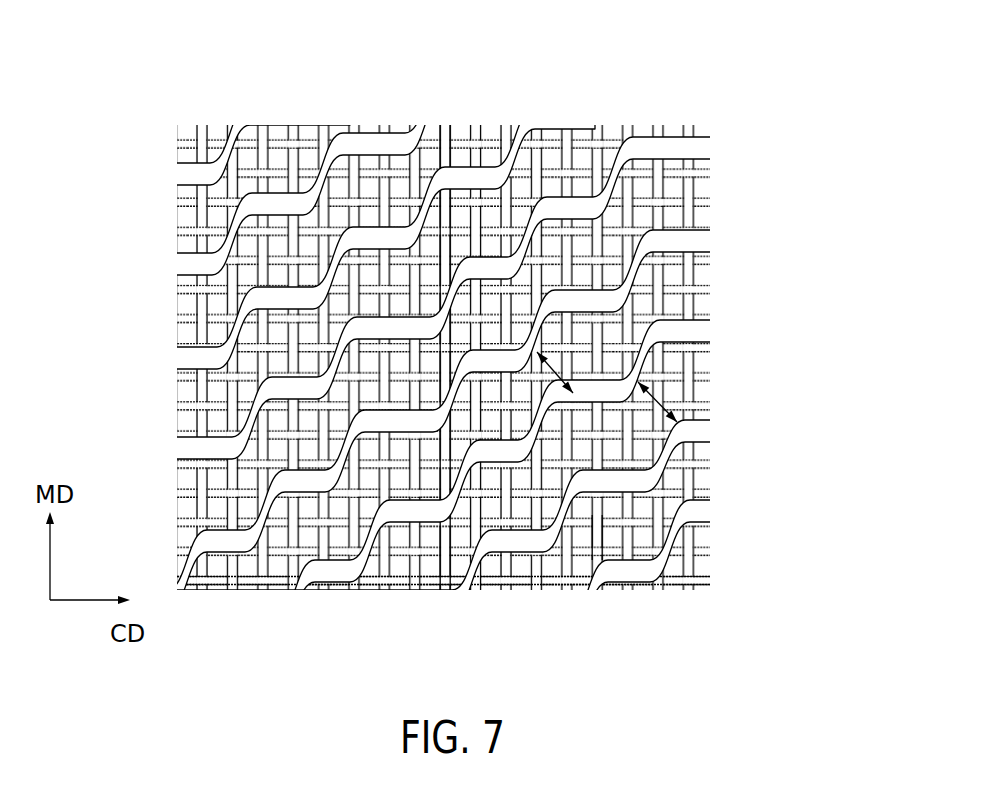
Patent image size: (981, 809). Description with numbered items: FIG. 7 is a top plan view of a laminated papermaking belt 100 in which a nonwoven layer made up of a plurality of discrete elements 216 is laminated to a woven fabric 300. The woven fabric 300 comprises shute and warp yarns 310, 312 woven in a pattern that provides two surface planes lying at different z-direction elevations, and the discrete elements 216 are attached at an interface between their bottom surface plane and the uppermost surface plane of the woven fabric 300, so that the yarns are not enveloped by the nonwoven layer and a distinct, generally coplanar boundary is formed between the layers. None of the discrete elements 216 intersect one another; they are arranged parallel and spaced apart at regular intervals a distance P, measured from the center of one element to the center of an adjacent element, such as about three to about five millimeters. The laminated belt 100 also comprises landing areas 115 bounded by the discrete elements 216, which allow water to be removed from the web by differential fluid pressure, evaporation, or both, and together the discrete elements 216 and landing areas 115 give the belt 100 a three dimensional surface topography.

The laminated papermaking belt 100 is at (484, 359).
The discrete elements 216 is at (668, 232).
The spacing distance P is at (660, 393).
The woven fabric 300 is at (697, 492).
The shute yarns 310 is at (443, 562).
The warp yarns 312 is at (520, 583).
The landing areas 115 is at (610, 537).